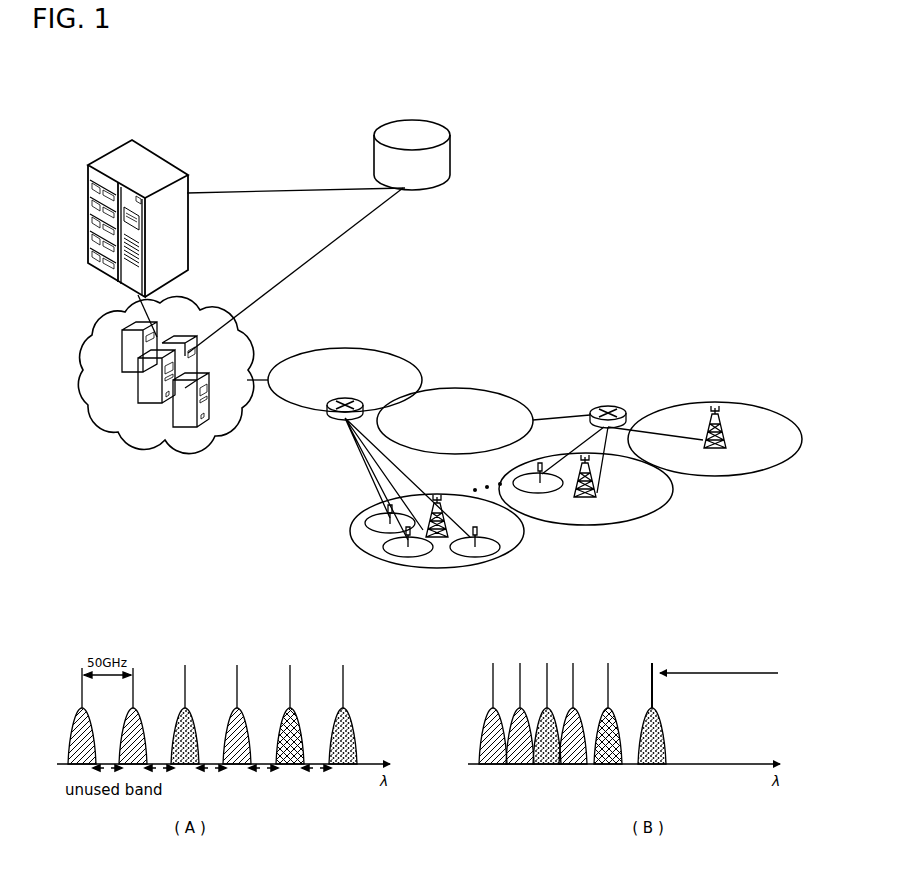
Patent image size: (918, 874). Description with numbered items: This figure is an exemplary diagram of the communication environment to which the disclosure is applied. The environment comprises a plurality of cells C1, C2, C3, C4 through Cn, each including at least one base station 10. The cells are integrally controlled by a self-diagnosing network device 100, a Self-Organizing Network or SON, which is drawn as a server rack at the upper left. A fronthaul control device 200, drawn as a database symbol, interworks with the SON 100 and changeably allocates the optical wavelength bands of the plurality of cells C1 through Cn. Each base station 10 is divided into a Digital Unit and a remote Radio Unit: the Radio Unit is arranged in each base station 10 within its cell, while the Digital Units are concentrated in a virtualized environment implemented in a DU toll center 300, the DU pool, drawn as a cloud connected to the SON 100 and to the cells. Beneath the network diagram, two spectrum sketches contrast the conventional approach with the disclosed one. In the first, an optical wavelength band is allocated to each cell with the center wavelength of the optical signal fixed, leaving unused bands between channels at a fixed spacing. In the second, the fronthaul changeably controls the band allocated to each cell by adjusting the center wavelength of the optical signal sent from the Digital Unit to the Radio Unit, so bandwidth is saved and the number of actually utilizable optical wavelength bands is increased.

The self-diagnosing network device 100 is at (107, 152).
The fronthaul control device 200 is at (410, 120).
The DU toll center 300 is at (92, 418).
The base station 10 is at (717, 405).
The cell C1 is at (345, 348).
The cell C2 is at (470, 388).
The cell C3 is at (688, 402).
The cell C4 is at (663, 508).
The cell Cn is at (522, 541).